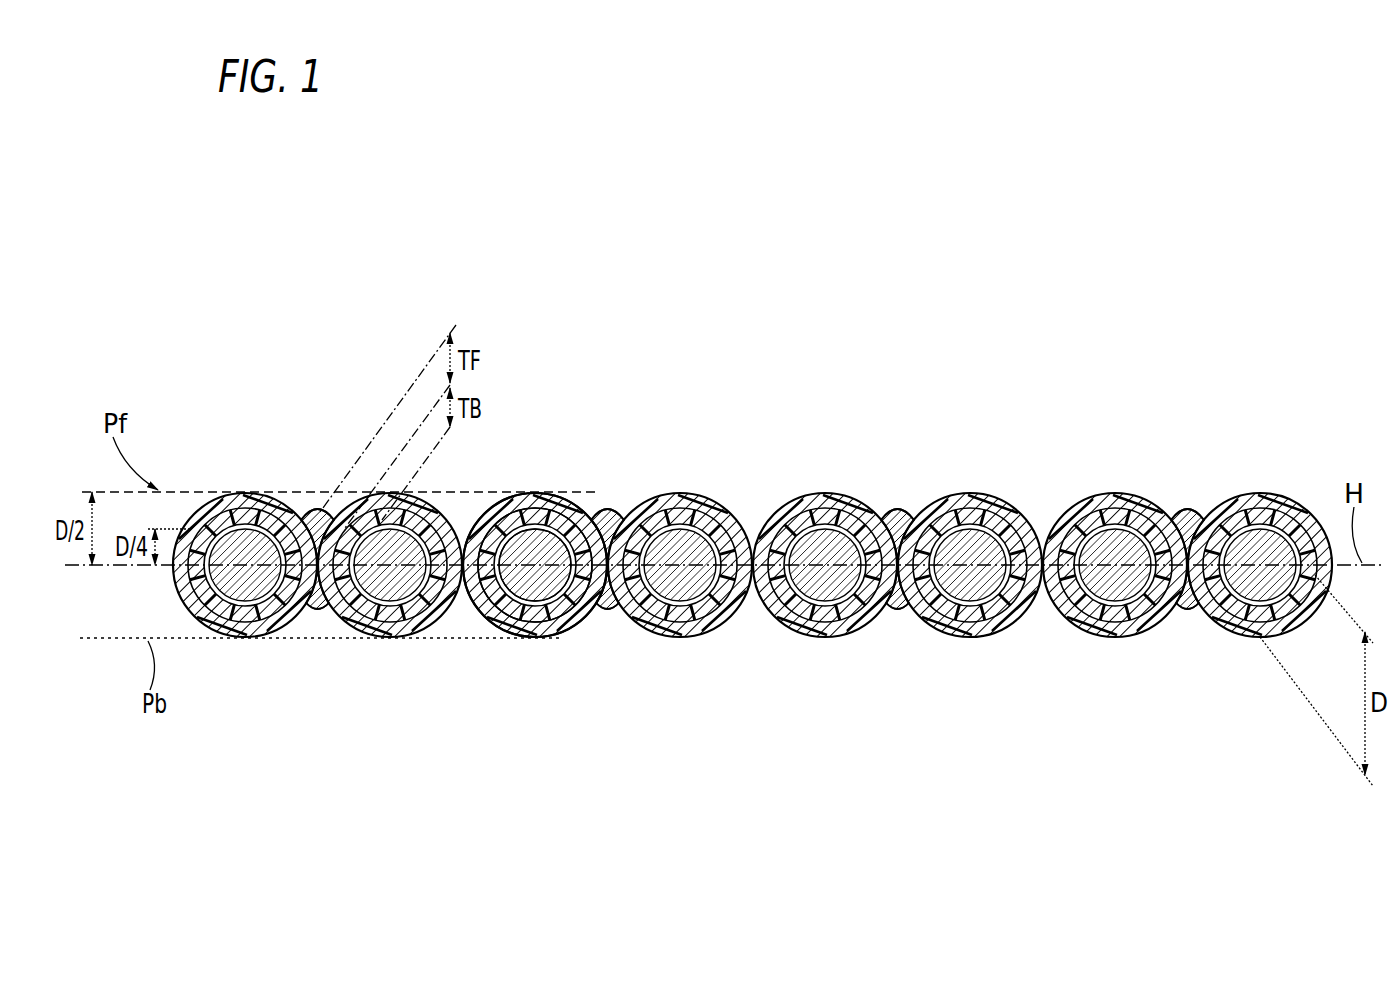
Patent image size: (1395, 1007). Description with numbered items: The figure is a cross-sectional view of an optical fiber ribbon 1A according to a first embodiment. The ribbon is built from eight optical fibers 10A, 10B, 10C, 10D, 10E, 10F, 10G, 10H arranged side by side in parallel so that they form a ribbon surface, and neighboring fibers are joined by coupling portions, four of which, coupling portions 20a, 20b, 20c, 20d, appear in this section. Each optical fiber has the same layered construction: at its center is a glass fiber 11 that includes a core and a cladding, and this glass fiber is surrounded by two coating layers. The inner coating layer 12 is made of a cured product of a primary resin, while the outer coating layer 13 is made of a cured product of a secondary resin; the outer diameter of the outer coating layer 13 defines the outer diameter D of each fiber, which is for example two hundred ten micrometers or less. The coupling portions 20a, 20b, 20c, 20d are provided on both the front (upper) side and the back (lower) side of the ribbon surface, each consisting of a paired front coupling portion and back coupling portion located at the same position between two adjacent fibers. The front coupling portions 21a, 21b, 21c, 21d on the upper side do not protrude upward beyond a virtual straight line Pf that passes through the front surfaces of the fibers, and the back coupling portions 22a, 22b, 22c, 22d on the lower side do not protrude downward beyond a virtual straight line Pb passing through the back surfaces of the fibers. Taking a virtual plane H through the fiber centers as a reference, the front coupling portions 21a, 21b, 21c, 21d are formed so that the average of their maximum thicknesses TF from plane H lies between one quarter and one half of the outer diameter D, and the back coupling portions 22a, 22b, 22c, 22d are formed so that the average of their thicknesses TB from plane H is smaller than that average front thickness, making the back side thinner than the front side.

The optical fiber ribbon 1A is at (766, 262).
The optical fiber 10A is at (228, 489).
The optical fiber 10B is at (446, 498).
The optical fiber 10C is at (548, 489).
The optical fiber 10D is at (690, 489).
The optical fiber 10E is at (827, 489).
The optical fiber 10F is at (975, 489).
The optical fiber 10G is at (1120, 489).
The optical fiber 10H is at (1262, 489).
The glass fiber 11 is at (490, 610).
The inner coating layer 12 is at (512, 630).
The outer coating layer 13 is at (552, 637).
The coupling portion 20a is at (316, 508).
The coupling portion 20b is at (606, 508).
The coupling portion 20c is at (896, 508).
The coupling portion 20d is at (1186, 508).
The front coupling portion 21a is at (310, 517).
The front coupling portion 21b is at (600, 517).
The front coupling portion 21c is at (890, 517).
The front coupling portion 21d is at (1180, 517).
The back coupling portion 22a is at (316, 606).
The back coupling portion 22b is at (605, 606).
The back coupling portion 22c is at (895, 606).
The back coupling portion 22d is at (1185, 606).